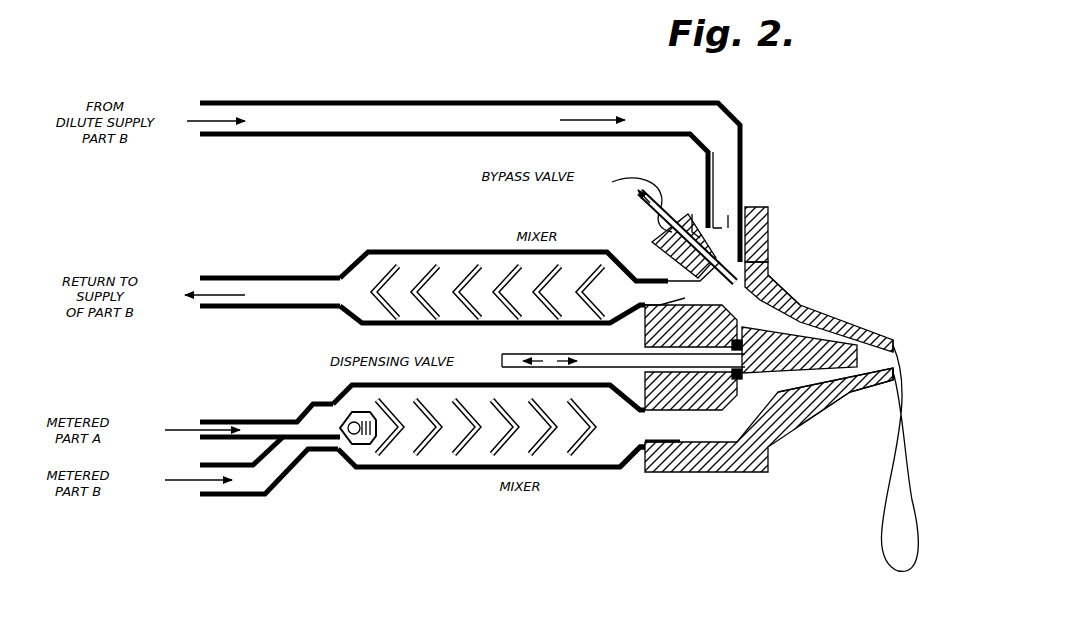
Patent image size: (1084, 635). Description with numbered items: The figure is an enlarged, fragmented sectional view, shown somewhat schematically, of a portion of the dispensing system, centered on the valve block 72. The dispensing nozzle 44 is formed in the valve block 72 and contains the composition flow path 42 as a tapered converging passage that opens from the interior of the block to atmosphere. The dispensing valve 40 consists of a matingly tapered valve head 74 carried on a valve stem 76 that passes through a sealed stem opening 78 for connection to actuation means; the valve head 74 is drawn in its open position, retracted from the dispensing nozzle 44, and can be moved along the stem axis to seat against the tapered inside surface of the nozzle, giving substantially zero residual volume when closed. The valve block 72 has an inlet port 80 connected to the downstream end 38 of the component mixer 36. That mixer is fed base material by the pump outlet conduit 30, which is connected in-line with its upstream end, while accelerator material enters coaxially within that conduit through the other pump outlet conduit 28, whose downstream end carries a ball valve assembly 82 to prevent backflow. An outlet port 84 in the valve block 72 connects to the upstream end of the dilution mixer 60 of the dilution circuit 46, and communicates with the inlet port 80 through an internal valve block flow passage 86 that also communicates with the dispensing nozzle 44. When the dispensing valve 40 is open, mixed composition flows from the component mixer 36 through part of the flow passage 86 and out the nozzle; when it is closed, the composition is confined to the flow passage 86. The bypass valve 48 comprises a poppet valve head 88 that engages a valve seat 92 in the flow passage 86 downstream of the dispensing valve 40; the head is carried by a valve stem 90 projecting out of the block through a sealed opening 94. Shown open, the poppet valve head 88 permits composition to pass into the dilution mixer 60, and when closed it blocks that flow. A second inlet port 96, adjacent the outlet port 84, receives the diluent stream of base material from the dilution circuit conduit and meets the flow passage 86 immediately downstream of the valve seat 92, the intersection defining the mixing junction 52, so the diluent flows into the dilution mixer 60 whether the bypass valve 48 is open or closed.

The pump outlet conduit 28 is at (230, 422).
The pump outlet conduit 30 is at (230, 494).
The component mixer 36 is at (400, 470).
The downstream end 38 is at (628, 450).
The dispensing valve 40 is at (795, 355).
The composition flow path 42 is at (870, 378).
The dispensing nozzle 44 is at (818, 398).
The dilution circuit 46 is at (770, 140).
The bypass valve 48 is at (745, 212).
The mixing junction 52 is at (682, 283).
The dilution mixer 60 is at (426, 252).
The valve block 72 is at (752, 470).
The valve head 74 is at (866, 338).
The valve stem 76 is at (603, 356).
The sealed stem opening 78 is at (655, 374).
The inlet port 80 is at (666, 440).
The ball valve assembly 82 is at (356, 444).
The outlet port 84 is at (658, 313).
The valve block flow passage 86 is at (790, 312).
The poppet valve head 88 is at (768, 232).
The valve stem 90 is at (636, 210).
The valve seat 92 is at (766, 288).
The sealed opening 94 is at (666, 252).
The second inlet port 96 is at (700, 220).